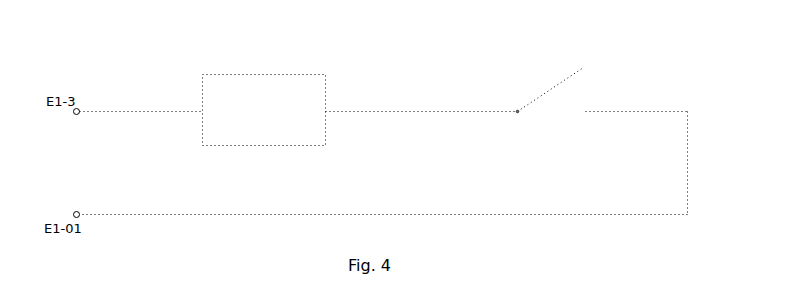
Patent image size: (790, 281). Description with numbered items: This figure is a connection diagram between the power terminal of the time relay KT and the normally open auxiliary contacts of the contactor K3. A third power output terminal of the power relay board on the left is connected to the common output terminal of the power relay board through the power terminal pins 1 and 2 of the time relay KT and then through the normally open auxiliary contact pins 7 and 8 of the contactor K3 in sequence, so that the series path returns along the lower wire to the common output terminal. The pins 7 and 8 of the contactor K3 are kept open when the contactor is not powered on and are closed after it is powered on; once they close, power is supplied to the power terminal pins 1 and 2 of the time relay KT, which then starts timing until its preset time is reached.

The power terminal pin 1 is at (141, 100).
The power terminal pin 2 is at (422, 100).
The normally open auxiliary contact pin 7 is at (502, 94).
The normally open auxiliary contact pin 8 is at (637, 93).
The time relay KT is at (264, 110).
The contactor K3 is at (551, 76).